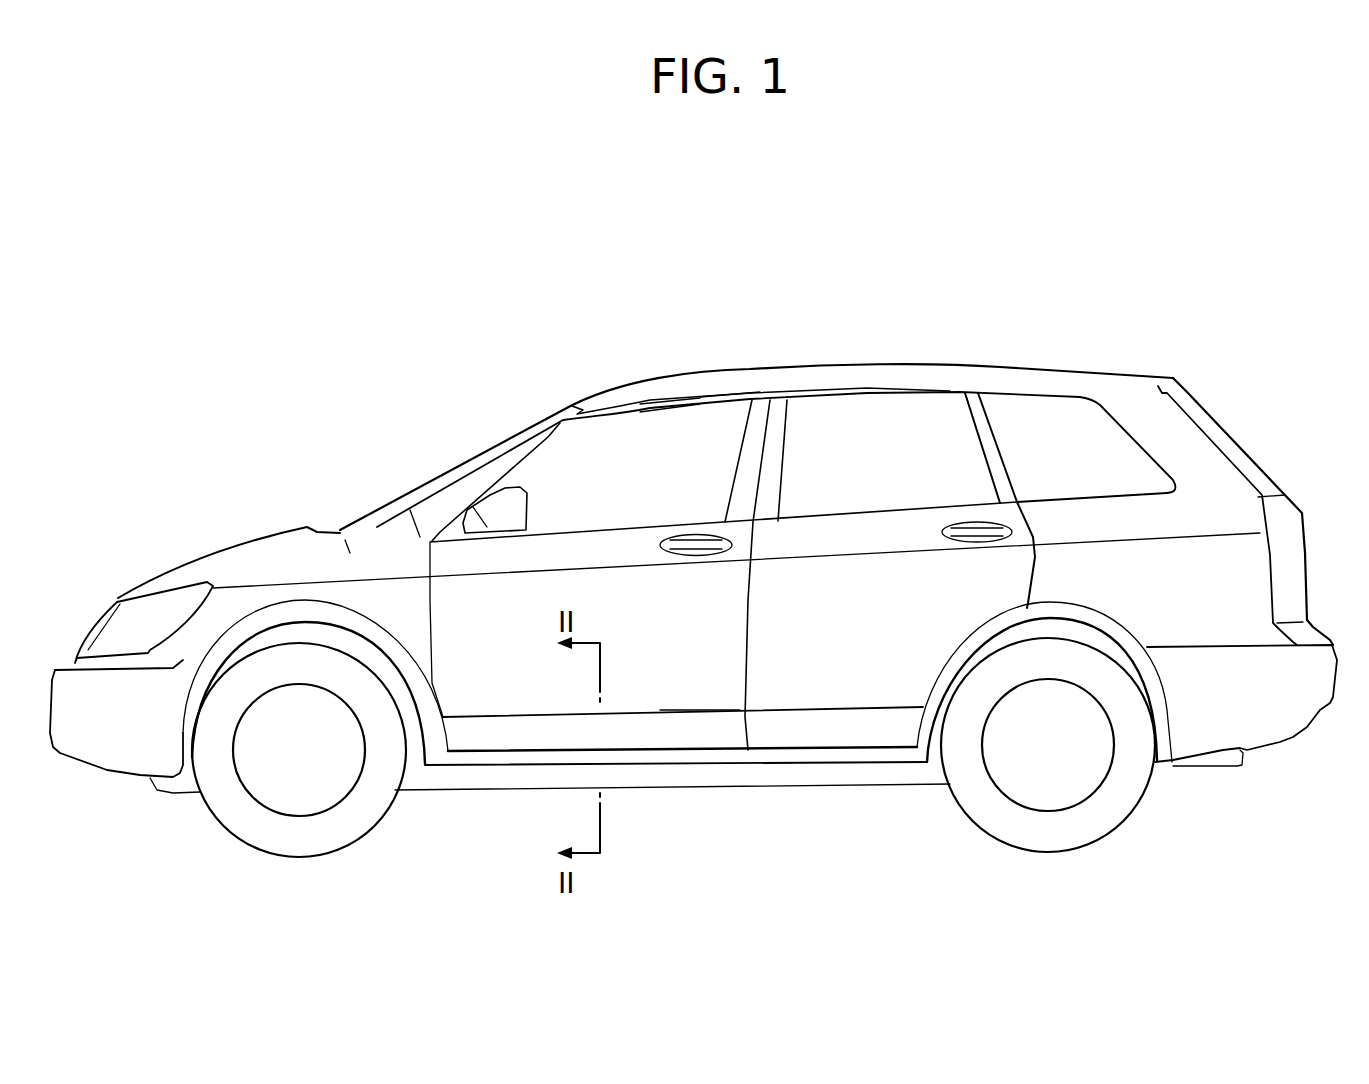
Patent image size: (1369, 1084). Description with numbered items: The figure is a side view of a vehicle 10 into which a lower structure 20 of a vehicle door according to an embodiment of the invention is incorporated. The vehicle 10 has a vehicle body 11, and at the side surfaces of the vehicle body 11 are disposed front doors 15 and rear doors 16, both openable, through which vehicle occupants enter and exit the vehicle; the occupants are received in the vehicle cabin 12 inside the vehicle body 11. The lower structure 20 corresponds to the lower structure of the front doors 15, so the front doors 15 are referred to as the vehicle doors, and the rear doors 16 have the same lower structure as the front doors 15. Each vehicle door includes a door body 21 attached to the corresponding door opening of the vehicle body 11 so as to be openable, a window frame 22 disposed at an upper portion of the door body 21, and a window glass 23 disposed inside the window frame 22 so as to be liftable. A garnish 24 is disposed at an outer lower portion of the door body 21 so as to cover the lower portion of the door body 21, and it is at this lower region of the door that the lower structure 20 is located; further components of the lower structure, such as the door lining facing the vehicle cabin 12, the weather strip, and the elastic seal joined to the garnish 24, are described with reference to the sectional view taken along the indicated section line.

The vehicle 10 is at (358, 273).
The vehicle body 11 is at (350, 457).
The vehicle cabin 12 is at (1065, 443).
The front door 15 is at (627, 428).
The rear door 16 is at (972, 393).
The lower structure 20 is at (503, 752).
The door body 21 is at (590, 553).
The window frame 22 is at (707, 400).
The window glass 23 is at (663, 423).
The garnish 24 is at (678, 720).